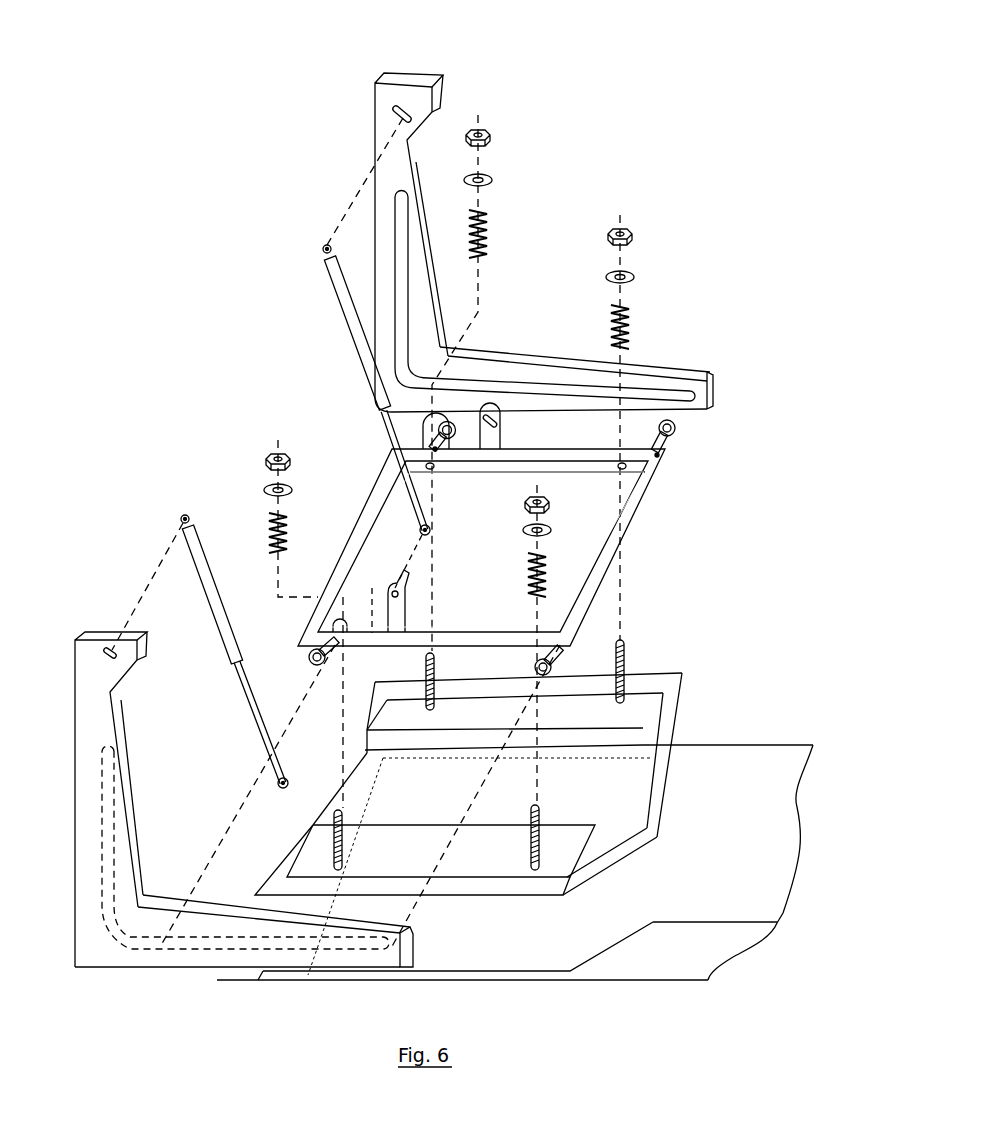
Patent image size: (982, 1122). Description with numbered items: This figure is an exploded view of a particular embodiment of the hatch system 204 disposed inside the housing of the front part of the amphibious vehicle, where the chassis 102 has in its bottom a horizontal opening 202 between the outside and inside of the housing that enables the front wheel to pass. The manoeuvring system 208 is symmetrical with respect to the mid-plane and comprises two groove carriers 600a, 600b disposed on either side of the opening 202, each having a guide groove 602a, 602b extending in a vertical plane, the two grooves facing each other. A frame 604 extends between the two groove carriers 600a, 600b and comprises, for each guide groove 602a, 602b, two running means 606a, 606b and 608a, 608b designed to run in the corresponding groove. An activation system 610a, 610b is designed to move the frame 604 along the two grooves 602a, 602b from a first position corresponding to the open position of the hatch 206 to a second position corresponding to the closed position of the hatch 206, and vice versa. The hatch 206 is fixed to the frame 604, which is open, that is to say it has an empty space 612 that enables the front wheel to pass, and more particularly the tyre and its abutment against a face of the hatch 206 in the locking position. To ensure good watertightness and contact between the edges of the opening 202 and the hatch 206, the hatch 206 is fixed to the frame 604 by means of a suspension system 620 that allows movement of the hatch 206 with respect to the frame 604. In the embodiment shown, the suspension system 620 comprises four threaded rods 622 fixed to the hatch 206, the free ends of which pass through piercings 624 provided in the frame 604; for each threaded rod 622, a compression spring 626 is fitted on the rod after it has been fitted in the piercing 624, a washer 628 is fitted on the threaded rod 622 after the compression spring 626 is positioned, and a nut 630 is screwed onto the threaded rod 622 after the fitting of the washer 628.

The chassis 102 is at (683, 965).
The opening 202 is at (551, 955).
The hatch system 204 is at (692, 68).
The hatch 206 is at (667, 727).
The manoeuvring system 208 is at (226, 355).
The groove carrier 600a is at (380, 102).
The groove carrier 600b is at (92, 652).
The guide groove 602a is at (713, 398).
The guide groove 602b is at (343, 950).
The frame 604 is at (645, 498).
The running means 606a is at (677, 425).
The running means 606b is at (560, 662).
The running means 608a is at (450, 418).
The running means 608b is at (308, 661).
The activation system 610a is at (343, 325).
The activation system 610b is at (212, 560).
The empty space 612 is at (583, 553).
The suspension system 620 is at (757, 255).
The threaded rod 622 is at (625, 663).
The piercing 624 is at (523, 632).
The compression spring 626 is at (632, 322).
The washer 628 is at (636, 275).
The nut 630 is at (633, 237).